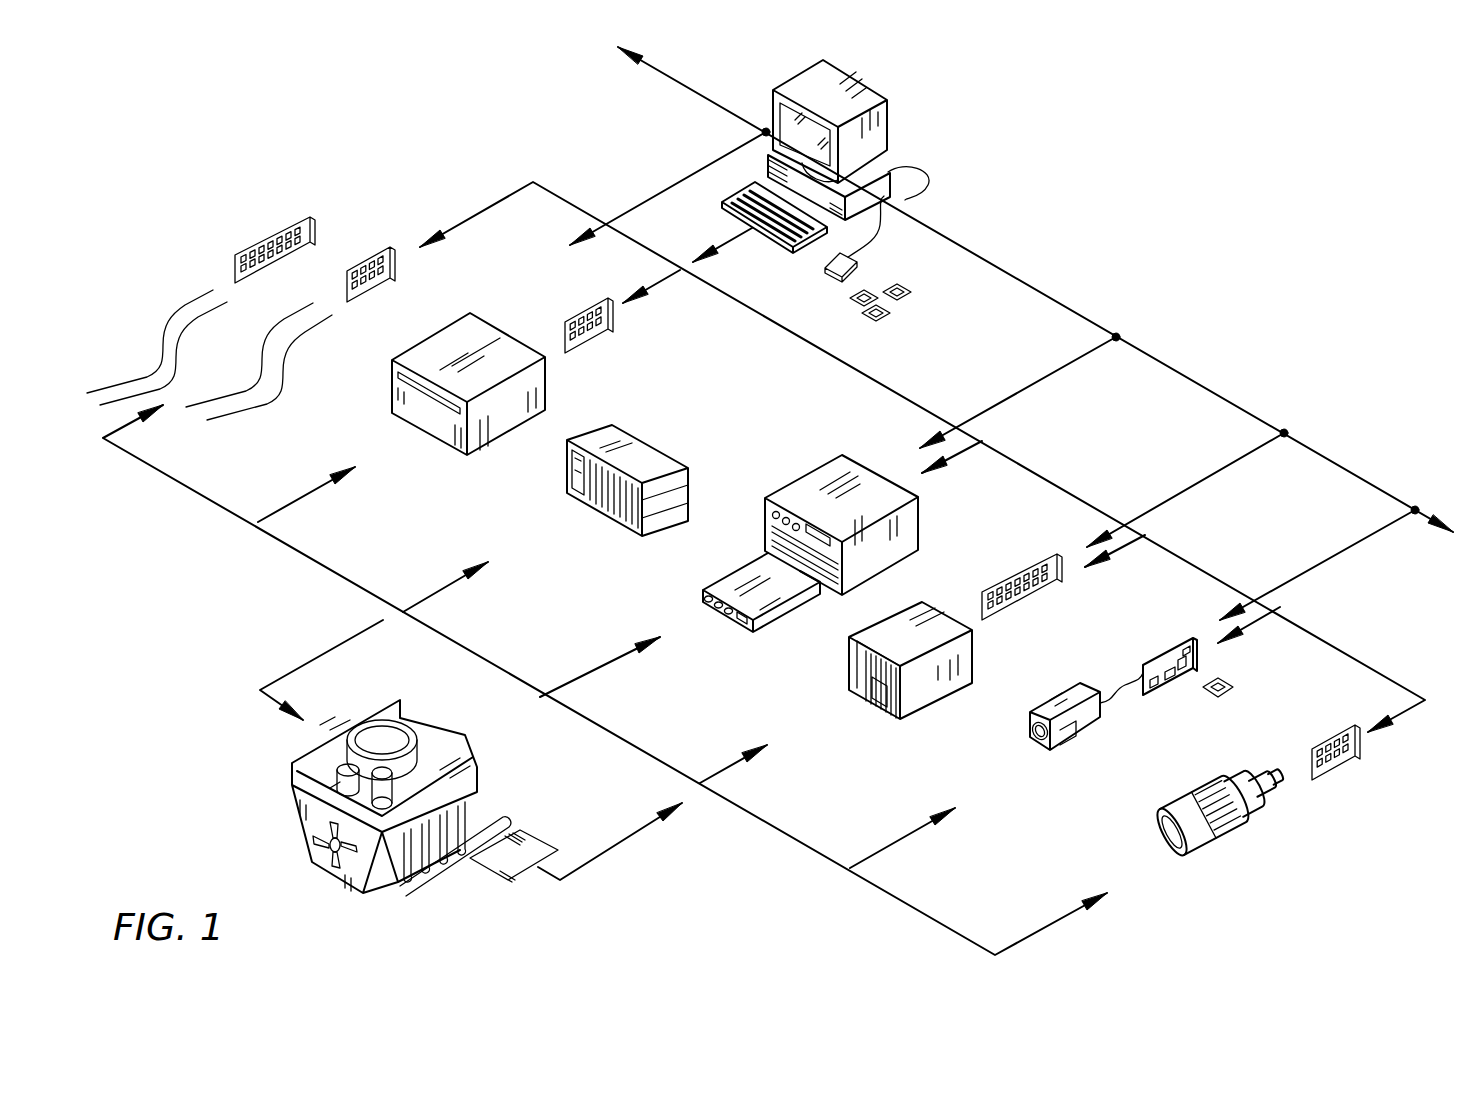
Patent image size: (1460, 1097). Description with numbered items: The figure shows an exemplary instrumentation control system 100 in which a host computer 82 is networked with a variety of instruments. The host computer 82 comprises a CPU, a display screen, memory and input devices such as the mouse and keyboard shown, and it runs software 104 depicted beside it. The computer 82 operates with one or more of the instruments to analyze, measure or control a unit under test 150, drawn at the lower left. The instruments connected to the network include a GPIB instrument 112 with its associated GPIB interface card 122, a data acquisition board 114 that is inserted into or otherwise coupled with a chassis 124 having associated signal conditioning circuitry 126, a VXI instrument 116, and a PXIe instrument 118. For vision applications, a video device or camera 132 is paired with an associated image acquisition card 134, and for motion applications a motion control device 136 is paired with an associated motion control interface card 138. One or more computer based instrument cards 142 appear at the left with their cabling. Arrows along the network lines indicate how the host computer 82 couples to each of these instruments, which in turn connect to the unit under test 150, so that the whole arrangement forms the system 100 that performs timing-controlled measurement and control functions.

The host computer 82 is at (852, 83).
The instrumentation control system 100 is at (1265, 182).
The software 104 is at (893, 307).
The GPIB instrument 112 is at (418, 345).
The data acquisition board 114 is at (1013, 613).
The VXI instrument 116 is at (815, 477).
The PXIe instrument 118 is at (640, 440).
The GPIB interface card 122 is at (575, 320).
The chassis 124 is at (860, 675).
The signal conditioning circuitry 126 is at (880, 700).
The video device or camera 132 is at (1072, 727).
The image acquisition card 134 is at (1165, 650).
The motion control device 136 is at (1217, 833).
The motion control interface card 138 is at (1337, 770).
The computer based instrument cards 142 is at (258, 248).
The unit under test 150 is at (303, 822).